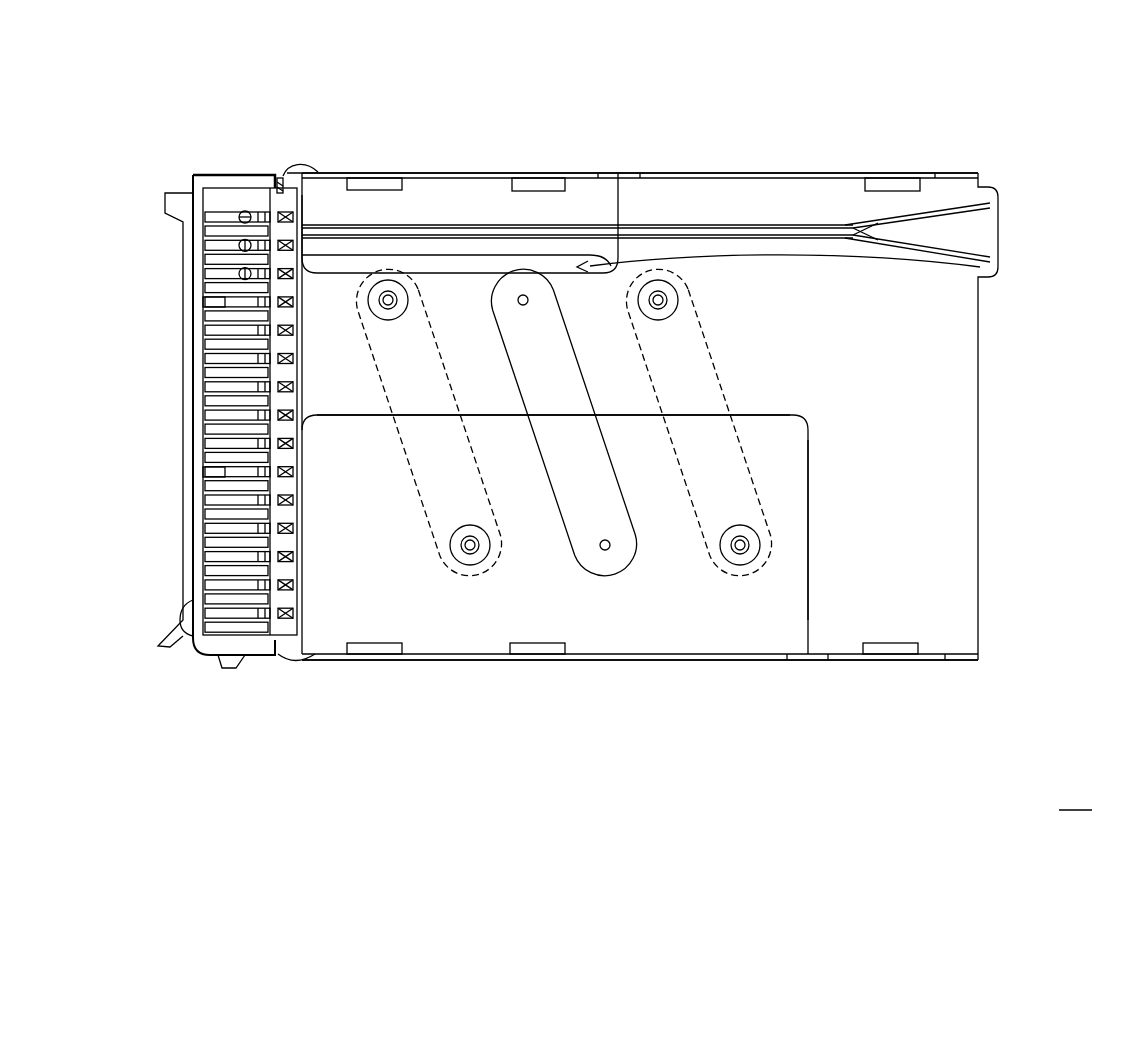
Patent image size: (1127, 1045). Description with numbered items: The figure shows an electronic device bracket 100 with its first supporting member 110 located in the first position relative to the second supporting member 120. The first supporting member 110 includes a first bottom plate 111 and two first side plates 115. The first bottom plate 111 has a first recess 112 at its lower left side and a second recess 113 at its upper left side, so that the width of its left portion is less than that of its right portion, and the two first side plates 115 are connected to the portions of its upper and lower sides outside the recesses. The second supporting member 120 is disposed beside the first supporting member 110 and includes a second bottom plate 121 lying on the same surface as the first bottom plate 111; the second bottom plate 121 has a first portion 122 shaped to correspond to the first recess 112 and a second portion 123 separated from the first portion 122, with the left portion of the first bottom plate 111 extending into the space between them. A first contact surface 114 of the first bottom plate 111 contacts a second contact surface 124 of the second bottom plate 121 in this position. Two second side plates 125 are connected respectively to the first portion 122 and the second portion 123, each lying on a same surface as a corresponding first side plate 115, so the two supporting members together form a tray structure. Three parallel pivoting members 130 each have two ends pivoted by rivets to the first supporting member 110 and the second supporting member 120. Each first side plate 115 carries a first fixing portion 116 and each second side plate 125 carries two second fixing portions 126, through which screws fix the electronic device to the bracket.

The electronic device bracket 100 is at (968, 96).
The first supporting member 110 is at (1058, 128).
The first bottom plate 111 is at (932, 462).
The first recess 112 is at (815, 527).
The second recess 113 is at (988, 275).
The first contact surface 114 is at (760, 425).
The first side plates 115 is at (933, 176).
The first fixing portion 116 is at (907, 186).
The second supporting member 120 is at (637, 769).
The second bottom plate 121 is at (437, 722).
The first portion 122 is at (420, 608).
The second portion 123 is at (334, 240).
The second contact surface 124 is at (478, 405).
The second side plates 125 is at (455, 176).
The second fixing portion 126 is at (385, 181).
The pivoting member 130 is at (612, 519).